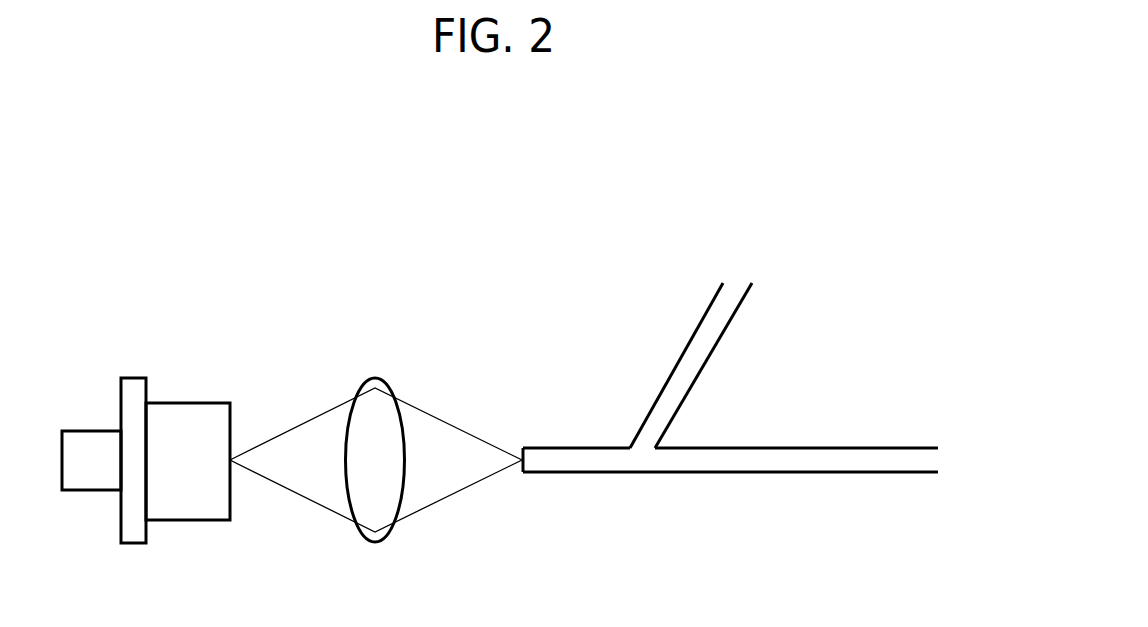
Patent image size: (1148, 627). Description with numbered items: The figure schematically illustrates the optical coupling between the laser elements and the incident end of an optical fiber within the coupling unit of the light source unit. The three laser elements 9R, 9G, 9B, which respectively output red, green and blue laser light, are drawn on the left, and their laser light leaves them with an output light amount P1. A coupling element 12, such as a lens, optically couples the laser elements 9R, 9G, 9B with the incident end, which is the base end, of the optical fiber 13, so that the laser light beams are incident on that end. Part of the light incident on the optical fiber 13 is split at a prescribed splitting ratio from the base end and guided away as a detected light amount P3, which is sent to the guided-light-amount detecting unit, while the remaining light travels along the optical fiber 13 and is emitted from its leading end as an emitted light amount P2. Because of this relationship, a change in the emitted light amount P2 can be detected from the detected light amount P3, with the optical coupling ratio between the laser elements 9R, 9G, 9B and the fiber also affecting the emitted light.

The laser element 9R is at (157, 392).
The laser element 9G is at (146, 460).
The laser element 9B is at (146, 460).
The coupling element 12 is at (387, 378).
The optical fiber 13 is at (730, 399).
The output light amount P1 is at (376, 460).
The emitted light amount P2 is at (730, 481).
The detected light amount P3 is at (691, 365).